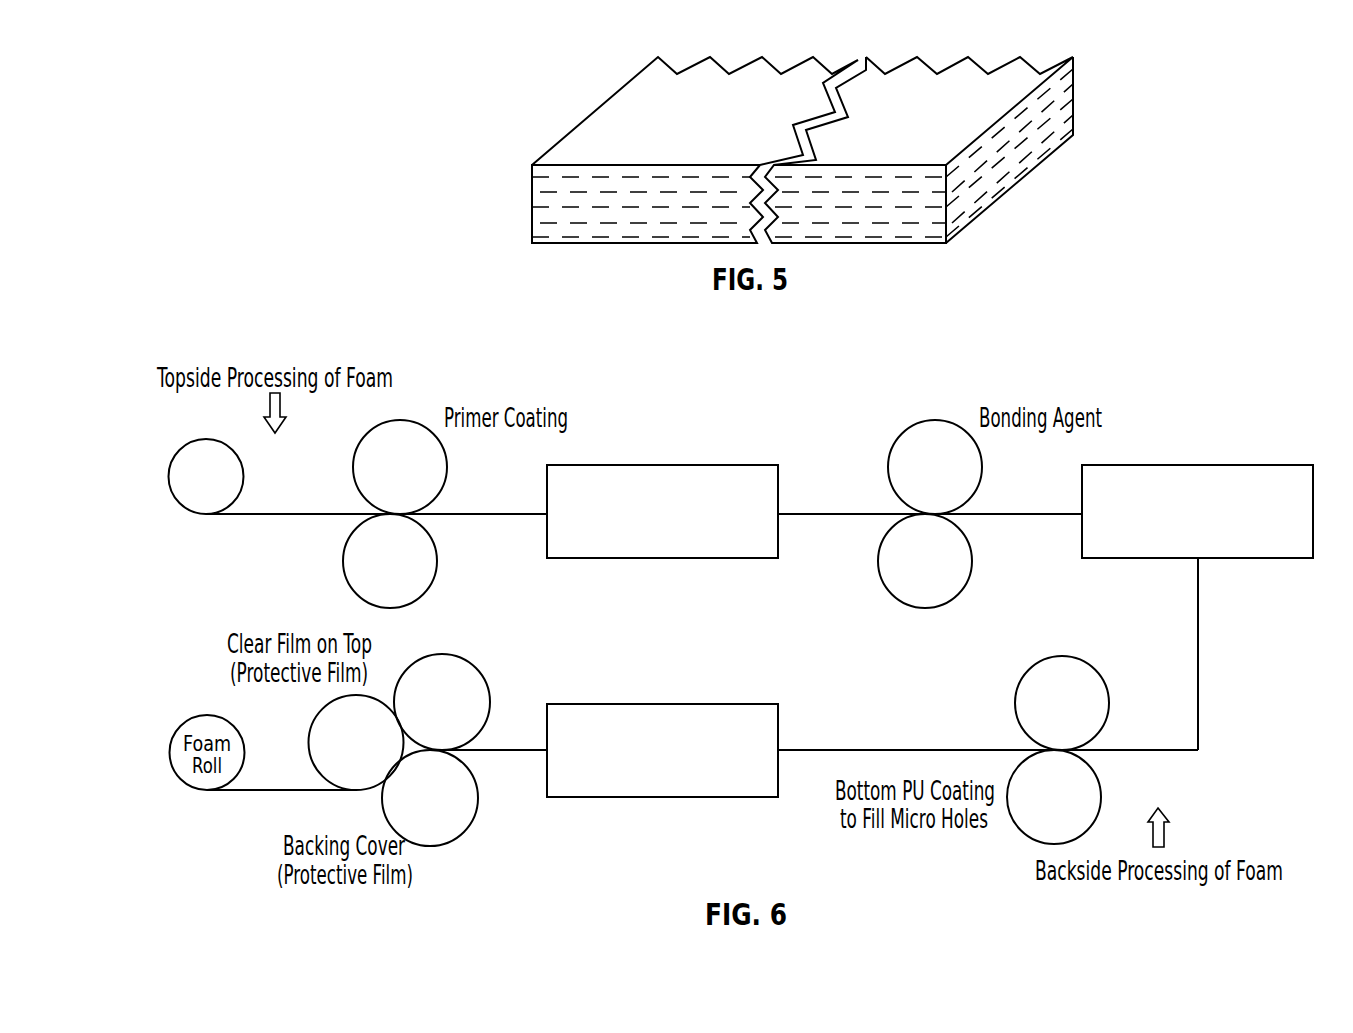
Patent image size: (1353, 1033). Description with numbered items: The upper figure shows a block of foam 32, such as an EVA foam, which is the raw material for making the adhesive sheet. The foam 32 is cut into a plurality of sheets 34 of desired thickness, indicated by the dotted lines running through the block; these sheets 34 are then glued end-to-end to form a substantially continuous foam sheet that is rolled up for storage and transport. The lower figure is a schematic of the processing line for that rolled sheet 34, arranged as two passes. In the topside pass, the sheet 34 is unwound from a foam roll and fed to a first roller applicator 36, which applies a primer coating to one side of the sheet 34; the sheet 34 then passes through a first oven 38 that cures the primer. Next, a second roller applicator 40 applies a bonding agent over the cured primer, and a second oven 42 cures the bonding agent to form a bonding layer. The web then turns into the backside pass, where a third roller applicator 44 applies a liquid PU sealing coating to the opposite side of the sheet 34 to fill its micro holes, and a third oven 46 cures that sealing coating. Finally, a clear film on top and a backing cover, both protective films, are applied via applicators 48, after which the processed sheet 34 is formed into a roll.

In FIG. 5, the foam 32 is at (804, 125).
In FIG. 5, the sheet 34 is at (543, 183).
In FIG. 6, the sheet 34 is at (207, 440).
In FIG. 6, the first roller applicator 36 is at (437, 400).
In FIG. 6, the first oven 38 is at (600, 465).
In FIG. 6, the second roller applicator 40 is at (966, 405).
In FIG. 6, the second oven 42 is at (1137, 465).
In FIG. 6, the third roller applicator 44 is at (1017, 858).
In FIG. 6, the third oven 46 is at (603, 704).
In FIG. 6, the applicators 48 is at (448, 864).